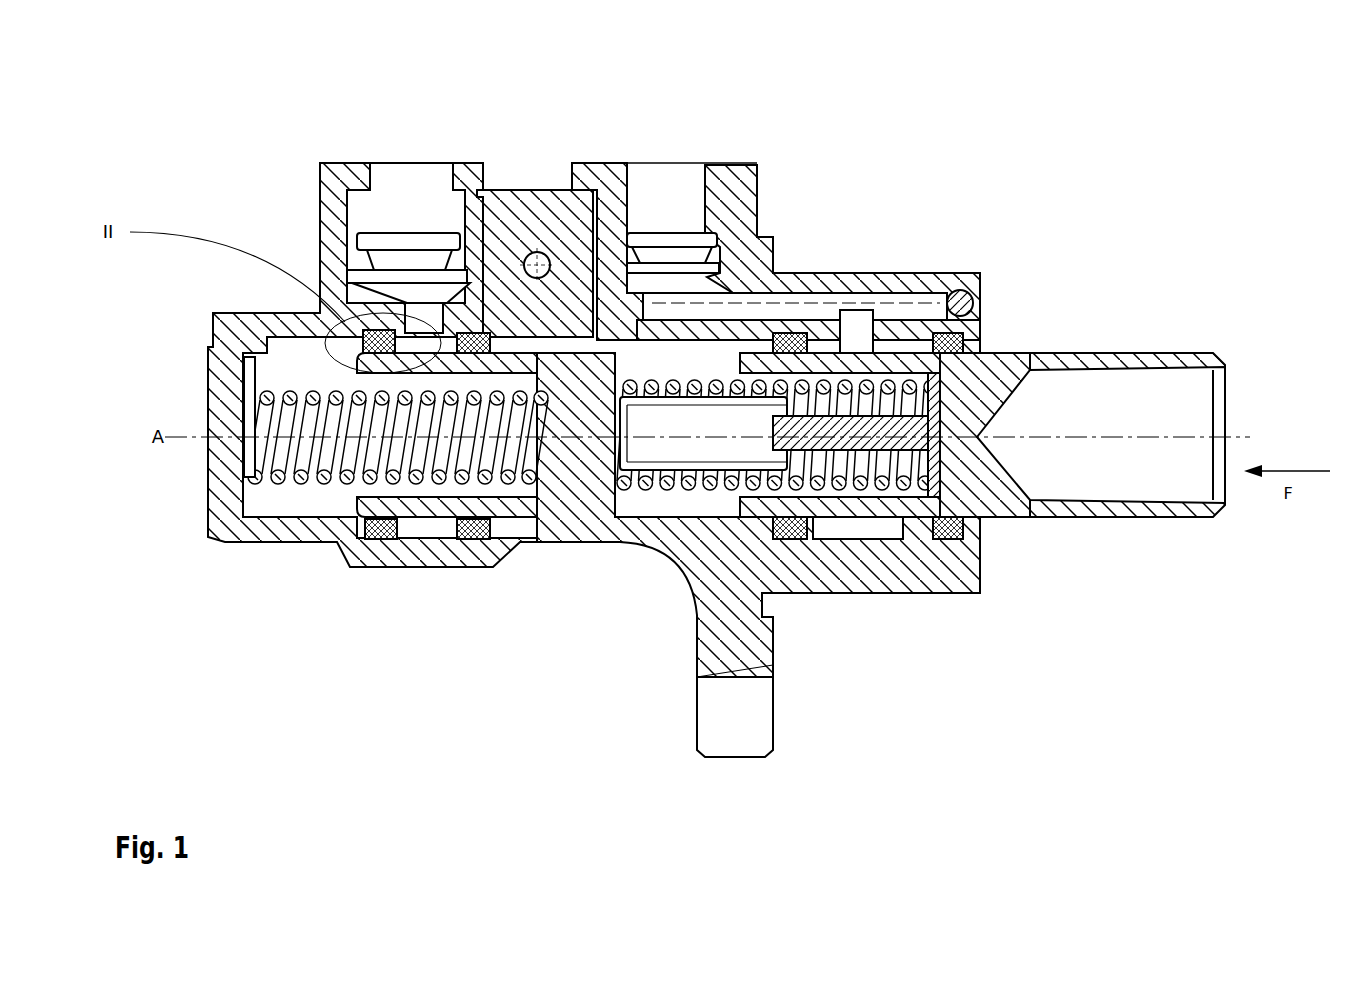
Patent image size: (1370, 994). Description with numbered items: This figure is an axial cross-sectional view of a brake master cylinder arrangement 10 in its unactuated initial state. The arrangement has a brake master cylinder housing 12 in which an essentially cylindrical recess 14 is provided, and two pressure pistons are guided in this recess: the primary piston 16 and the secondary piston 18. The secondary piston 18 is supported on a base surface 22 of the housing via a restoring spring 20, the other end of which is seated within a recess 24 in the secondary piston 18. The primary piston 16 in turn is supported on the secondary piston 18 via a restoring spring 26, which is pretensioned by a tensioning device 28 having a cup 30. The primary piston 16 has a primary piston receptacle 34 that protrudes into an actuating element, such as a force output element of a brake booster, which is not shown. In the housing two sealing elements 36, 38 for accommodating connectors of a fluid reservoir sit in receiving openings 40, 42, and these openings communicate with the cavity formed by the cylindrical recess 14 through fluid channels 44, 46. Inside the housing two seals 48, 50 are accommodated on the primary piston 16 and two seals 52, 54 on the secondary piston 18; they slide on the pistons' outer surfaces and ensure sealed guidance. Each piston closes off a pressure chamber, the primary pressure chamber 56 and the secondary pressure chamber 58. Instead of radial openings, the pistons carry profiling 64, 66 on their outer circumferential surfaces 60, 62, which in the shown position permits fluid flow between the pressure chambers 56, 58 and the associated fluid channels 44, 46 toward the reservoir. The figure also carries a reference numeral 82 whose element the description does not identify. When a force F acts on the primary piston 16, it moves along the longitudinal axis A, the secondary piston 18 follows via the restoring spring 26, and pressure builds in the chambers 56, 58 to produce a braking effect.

The brake master cylinder arrangement 10 is at (457, 600).
The brake master cylinder housing 12 is at (585, 560).
The cylindrical recess 14 is at (323, 520).
The primary piston 16 is at (1003, 367).
The secondary piston 18 is at (567, 503).
The restoring spring 20 is at (277, 527).
The base surface 22 is at (250, 512).
The recess 24 is at (428, 488).
The restoring spring 26 is at (797, 278).
The tensioning device 28 is at (647, 500).
The cup 30 is at (663, 385).
The primary piston receptacle 34 is at (1110, 403).
The sealing element 36 is at (357, 165).
The sealing element 38 is at (728, 385).
The receiving opening 40 is at (317, 175).
The receiving opening 42 is at (595, 195).
The fluid channel 44 is at (410, 203).
The fluid channel 46 is at (820, 277).
The seal 48 is at (380, 540).
The seal 50 is at (470, 527).
The seal 52 is at (817, 307).
The seal 54 is at (945, 353).
The primary pressure chamber 56 is at (672, 507).
The secondary pressure chamber 58 is at (267, 380).
The outer circumferential surface 60 is at (1053, 353).
The outer circumferential surface 62 is at (530, 255).
The profiling 64 is at (807, 490).
The profiling 66 is at (405, 520).
The piston rod 82 is at (863, 455).